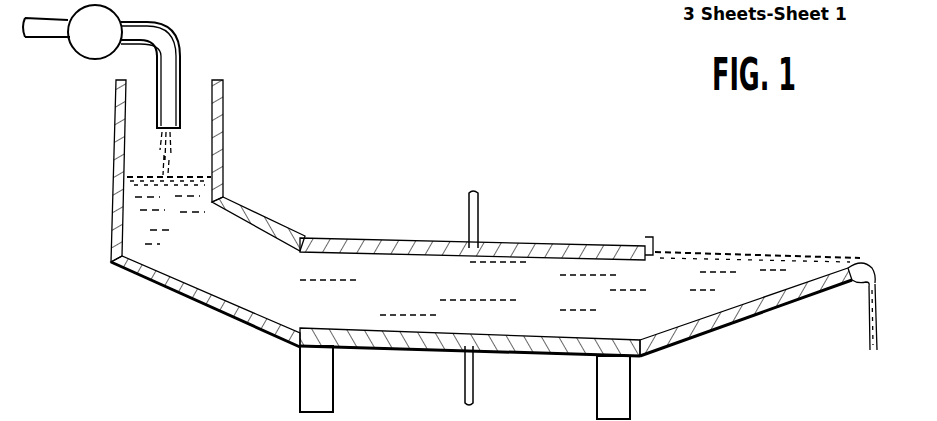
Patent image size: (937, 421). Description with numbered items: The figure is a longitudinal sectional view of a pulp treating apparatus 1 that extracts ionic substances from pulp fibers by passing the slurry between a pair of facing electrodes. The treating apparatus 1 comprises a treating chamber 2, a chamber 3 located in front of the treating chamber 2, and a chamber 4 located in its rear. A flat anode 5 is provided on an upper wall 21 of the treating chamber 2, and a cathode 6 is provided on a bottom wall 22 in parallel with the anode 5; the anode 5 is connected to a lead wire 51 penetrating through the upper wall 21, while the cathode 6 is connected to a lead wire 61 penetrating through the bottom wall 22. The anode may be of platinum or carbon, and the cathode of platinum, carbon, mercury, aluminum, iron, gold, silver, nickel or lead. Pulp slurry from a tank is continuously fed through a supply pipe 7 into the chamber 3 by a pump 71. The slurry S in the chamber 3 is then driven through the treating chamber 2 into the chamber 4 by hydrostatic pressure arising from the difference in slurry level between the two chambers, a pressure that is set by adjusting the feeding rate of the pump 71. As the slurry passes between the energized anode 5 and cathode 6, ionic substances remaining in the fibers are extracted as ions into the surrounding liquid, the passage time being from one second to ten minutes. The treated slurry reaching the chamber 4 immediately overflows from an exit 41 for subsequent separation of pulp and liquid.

The treating apparatus 1 is at (256, 207).
The treating chamber 2 is at (580, 258).
The upper wall 21 is at (374, 237).
The chamber 3 is at (185, 265).
The chamber 4 is at (758, 280).
The exit 41 is at (868, 272).
The anode 5 is at (418, 246).
The lead wire 51 is at (480, 212).
The cathode 6 is at (470, 373).
The bottom wall 22 is at (396, 343).
The lead wire 61 is at (465, 379).
The supply pipe 7 is at (152, 27).
The pump 71 is at (83, 60).
The slurry S is at (267, 293).